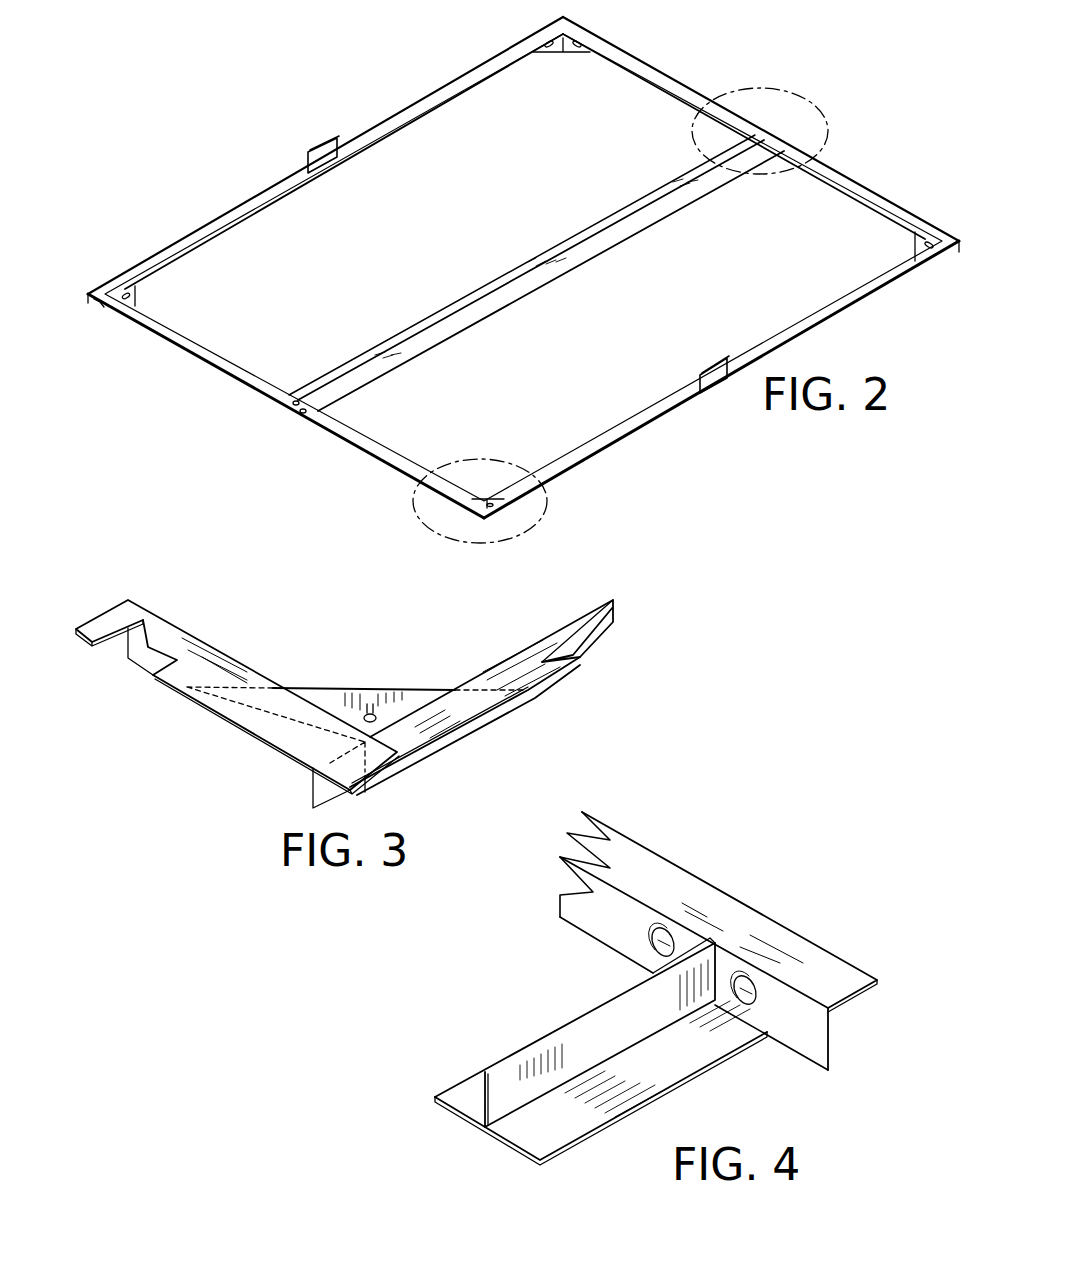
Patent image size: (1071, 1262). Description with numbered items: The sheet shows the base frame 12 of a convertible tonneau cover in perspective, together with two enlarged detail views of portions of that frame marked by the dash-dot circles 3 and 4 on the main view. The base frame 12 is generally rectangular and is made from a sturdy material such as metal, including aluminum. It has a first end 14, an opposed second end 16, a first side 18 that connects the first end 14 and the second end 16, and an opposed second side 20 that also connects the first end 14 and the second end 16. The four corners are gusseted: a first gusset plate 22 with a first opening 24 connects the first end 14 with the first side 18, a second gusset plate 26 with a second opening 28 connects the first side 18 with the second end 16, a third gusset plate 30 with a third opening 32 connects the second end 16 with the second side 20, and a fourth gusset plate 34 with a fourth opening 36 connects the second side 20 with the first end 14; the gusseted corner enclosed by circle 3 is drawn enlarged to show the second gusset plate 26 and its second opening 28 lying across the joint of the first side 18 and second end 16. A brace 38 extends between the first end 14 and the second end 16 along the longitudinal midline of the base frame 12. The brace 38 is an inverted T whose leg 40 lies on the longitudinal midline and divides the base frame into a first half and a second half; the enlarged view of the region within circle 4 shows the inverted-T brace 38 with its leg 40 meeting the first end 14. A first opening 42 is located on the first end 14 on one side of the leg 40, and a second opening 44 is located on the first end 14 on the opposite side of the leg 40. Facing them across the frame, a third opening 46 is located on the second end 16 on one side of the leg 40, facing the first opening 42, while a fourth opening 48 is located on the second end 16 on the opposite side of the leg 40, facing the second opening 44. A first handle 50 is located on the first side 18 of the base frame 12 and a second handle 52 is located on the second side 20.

In FIG. 2, the base frame 12 is at (523, 292).
In FIG. 2, the first end 14 is at (856, 186).
In FIG. 4, the first end 14 is at (841, 977).
In FIG. 2, the second end 16 is at (372, 451).
In FIG. 3, the second end 16 is at (160, 628).
In FIG. 2, the first side 18 is at (641, 427).
In FIG. 3, the first side 18 is at (611, 627).
In FIG. 2, the second side 20 is at (238, 206).
In FIG. 2, the first gusset plate 22 is at (905, 253).
In FIG. 2, the first opening 24 is at (913, 238).
In FIG. 3, the second gusset plate 26 is at (325, 698).
In FIG. 3, the second opening 28 is at (372, 712).
In FIG. 2, the third gusset plate 30 is at (137, 292).
In FIG. 2, the third opening 32 is at (140, 302).
In FIG. 2, the fourth gusset plate 34 is at (573, 50).
In FIG. 2, the fourth opening 36 is at (549, 49).
In FIG. 2, the brace 38 is at (542, 288).
In FIG. 4, the brace 38 is at (594, 1076).
In FIG. 4, the leg 40 is at (567, 1027).
In FIG. 4, the first opening 42 is at (728, 975).
In FIG. 4, the second opening 44 is at (648, 920).
In FIG. 2, the third opening 46 is at (296, 420).
In FIG. 2, the fourth opening 48 is at (280, 402).
In FIG. 2, the first handle 50 is at (704, 366).
In FIG. 2, the second handle 52 is at (334, 147).
In FIG. 2, the detail view circle FIG. 3 is at (480, 513).
In FIG. 2, the detail view circle FIG. 4 is at (760, 126).